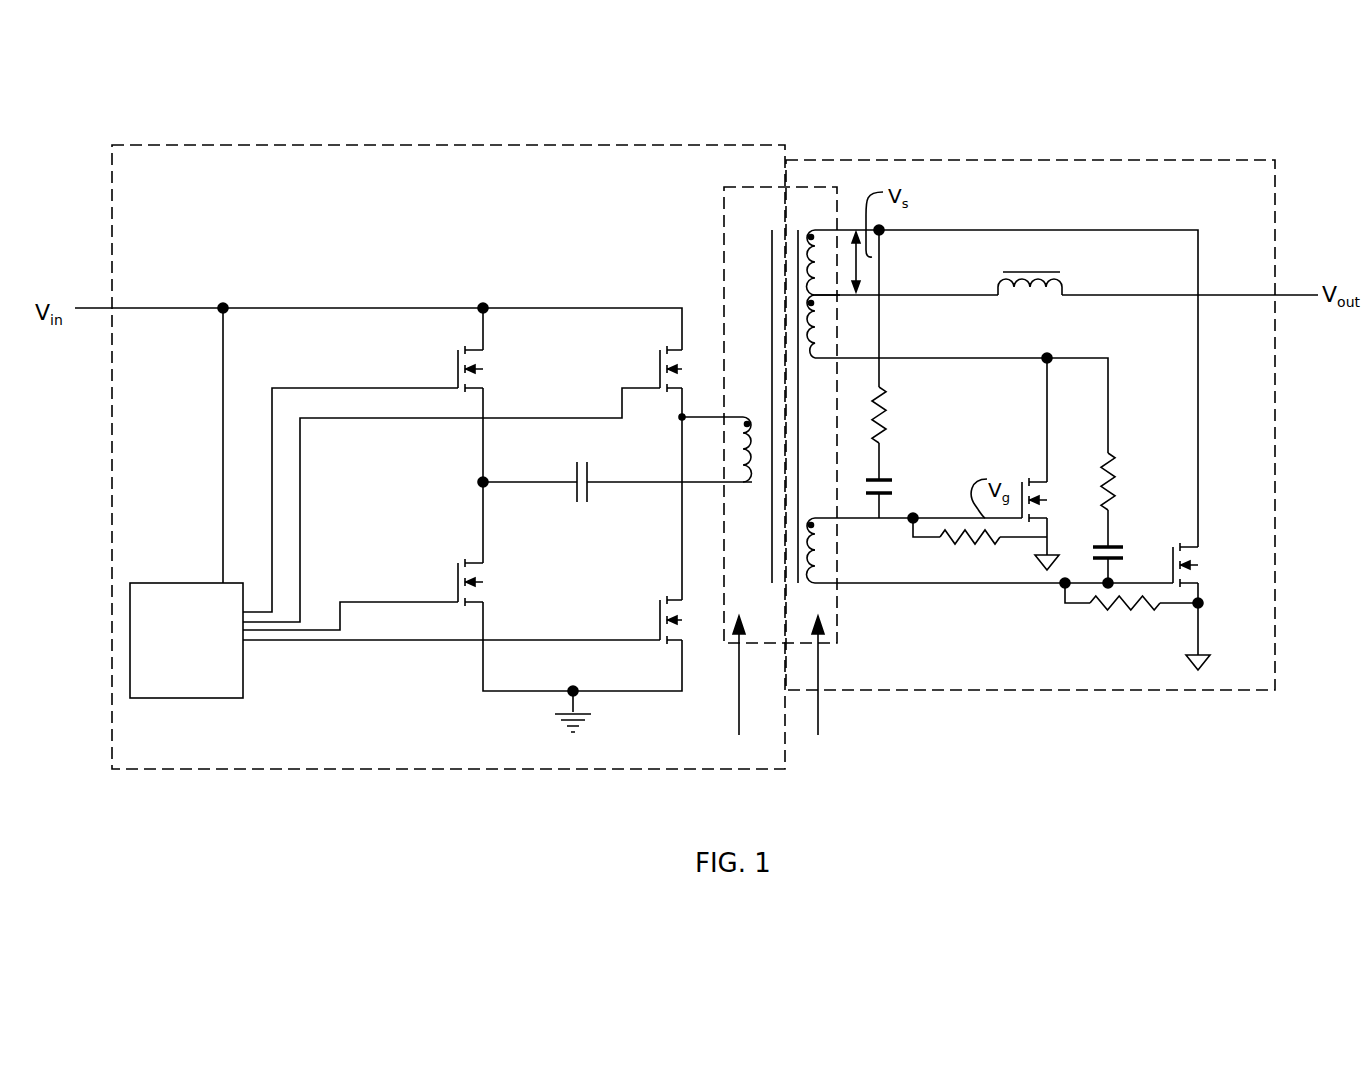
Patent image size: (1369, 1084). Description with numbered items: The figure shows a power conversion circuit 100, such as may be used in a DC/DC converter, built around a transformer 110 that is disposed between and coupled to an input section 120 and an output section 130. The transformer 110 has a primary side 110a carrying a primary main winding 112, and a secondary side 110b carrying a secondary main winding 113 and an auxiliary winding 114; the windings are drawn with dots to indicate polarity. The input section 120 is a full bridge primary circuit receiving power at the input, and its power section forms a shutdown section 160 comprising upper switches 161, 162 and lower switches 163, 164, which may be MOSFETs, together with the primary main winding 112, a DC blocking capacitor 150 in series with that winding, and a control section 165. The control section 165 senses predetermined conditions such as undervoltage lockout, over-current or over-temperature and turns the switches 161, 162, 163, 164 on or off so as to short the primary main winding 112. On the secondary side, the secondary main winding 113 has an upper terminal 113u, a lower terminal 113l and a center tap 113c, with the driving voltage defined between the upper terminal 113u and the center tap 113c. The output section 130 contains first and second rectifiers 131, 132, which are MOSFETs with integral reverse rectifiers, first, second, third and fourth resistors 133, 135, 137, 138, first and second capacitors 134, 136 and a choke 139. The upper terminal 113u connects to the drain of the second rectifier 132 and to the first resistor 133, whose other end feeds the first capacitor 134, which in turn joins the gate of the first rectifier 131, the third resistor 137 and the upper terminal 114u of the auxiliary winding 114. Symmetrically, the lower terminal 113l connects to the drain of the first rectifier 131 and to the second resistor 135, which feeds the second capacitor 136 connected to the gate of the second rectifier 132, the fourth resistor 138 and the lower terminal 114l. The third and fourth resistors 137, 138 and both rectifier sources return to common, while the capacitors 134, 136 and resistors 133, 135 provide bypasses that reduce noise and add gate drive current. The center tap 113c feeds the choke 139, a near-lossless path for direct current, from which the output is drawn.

The power conversion circuit 100 is at (651, 92).
The transformer 110 is at (793, 467).
The primary side 110a is at (739, 725).
The secondary side 110b is at (818, 725).
The primary main winding 112 is at (750, 484).
The secondary main winding 113 is at (859, 236).
The upper terminal 113u is at (825, 228).
The center tap 113c is at (817, 296).
The lower terminal 113l is at (818, 356).
The auxiliary winding 114 is at (868, 597).
The upper terminal 114u is at (820, 524).
The lower terminal 114l is at (818, 584).
The input section 120 is at (448, 770).
The output section 130 is at (1027, 690).
The first rectifier 131 is at (1022, 482).
The second rectifier 132 is at (1181, 549).
The first resistor 133 is at (884, 410).
The first capacitor 134 is at (882, 480).
The second resistor 135 is at (1110, 456).
The second capacitor 136 is at (1108, 546).
The third resistor 137 is at (1002, 540).
The fourth resistor 138 is at (1122, 608).
The choke 139 is at (1065, 283).
The DC blocking capacitor 150 is at (577, 503).
The shutdown section 160 is at (333, 266).
The upper switch 161 is at (486, 380).
The upper switch 162 is at (655, 377).
The lower switch 163 is at (485, 594).
The lower switch 164 is at (660, 617).
The control section 165 is at (203, 698).